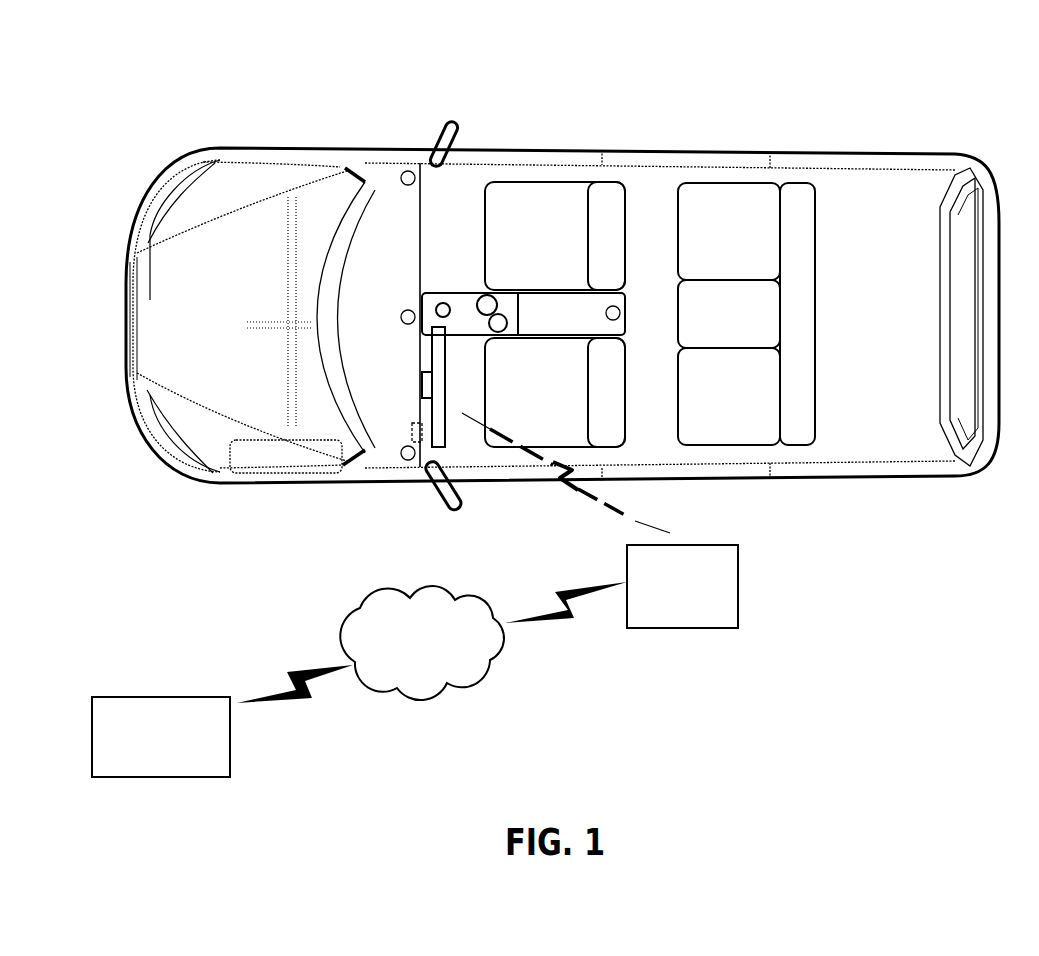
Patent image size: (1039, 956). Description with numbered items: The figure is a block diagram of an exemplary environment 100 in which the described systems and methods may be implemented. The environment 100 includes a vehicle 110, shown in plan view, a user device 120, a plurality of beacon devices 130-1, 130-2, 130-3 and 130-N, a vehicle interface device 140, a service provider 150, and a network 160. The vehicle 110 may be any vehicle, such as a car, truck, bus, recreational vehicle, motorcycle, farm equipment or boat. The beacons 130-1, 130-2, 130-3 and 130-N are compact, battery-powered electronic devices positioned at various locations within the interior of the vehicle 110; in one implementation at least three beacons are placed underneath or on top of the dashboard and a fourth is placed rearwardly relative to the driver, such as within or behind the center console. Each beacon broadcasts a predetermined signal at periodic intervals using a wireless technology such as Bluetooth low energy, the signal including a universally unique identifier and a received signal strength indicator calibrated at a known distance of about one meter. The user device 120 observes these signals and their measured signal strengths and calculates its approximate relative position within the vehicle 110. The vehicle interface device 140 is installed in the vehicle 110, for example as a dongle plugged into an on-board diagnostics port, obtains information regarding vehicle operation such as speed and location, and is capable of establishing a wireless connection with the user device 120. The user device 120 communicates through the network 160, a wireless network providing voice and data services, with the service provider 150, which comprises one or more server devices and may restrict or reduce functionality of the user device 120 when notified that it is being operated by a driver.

The environment 100 is at (262, 78).
The vehicle 110 is at (817, 160).
The user device 120 is at (682, 586).
The beacon device 130-1 is at (402, 450).
The beacon device 130-2 is at (402, 313).
The beacon device 130-3 is at (410, 172).
The beacon device 130-N is at (622, 320).
The vehicle interface device 140 is at (412, 425).
The service provider 150 is at (161, 737).
The network 160 is at (422, 643).